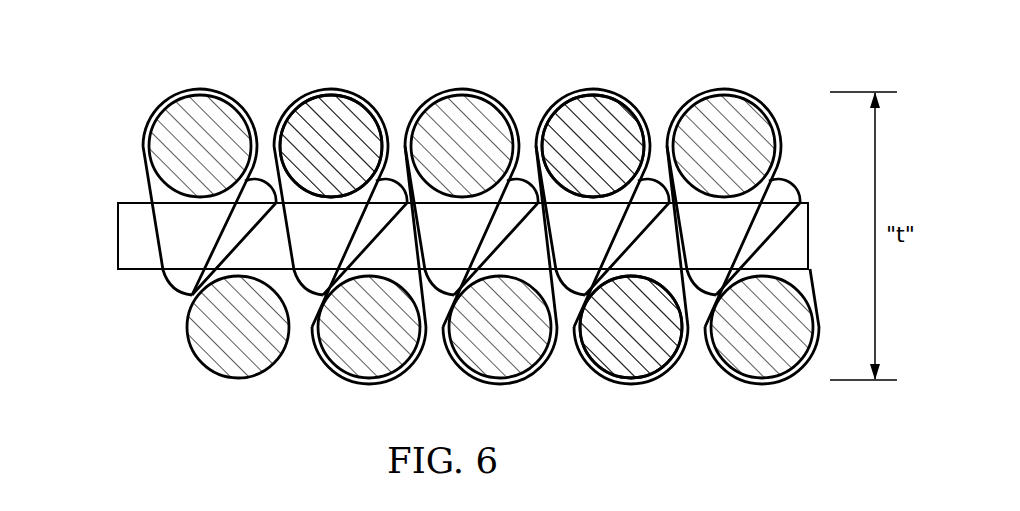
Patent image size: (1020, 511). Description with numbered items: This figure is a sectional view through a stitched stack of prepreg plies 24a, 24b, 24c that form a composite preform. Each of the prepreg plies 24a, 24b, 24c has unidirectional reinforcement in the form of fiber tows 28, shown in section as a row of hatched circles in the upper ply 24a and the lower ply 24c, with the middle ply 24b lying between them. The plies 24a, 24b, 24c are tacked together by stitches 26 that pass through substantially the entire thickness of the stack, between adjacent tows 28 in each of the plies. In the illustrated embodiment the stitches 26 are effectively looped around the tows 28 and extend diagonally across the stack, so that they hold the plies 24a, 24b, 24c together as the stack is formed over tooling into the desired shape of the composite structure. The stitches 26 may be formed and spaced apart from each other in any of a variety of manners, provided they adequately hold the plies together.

The prepreg ply 24a is at (125, 66).
The prepreg ply 24b is at (105, 197).
The prepreg ply 24c is at (175, 405).
The stitch 26 is at (332, 90).
The fiber tow 28 is at (207, 100).